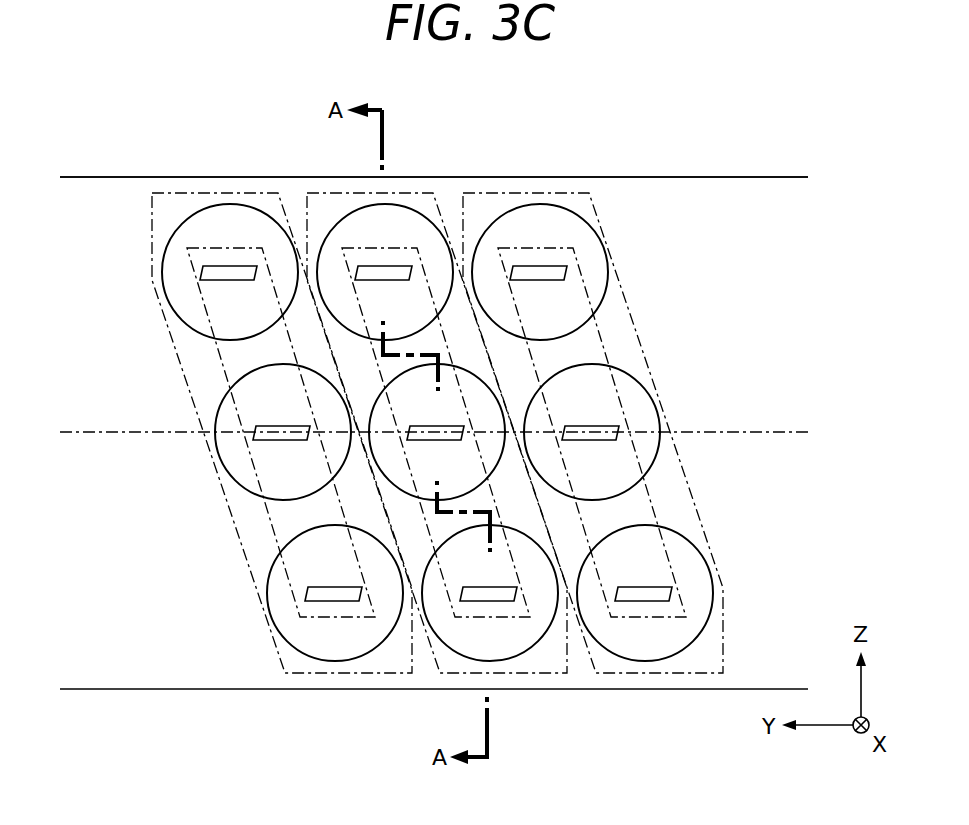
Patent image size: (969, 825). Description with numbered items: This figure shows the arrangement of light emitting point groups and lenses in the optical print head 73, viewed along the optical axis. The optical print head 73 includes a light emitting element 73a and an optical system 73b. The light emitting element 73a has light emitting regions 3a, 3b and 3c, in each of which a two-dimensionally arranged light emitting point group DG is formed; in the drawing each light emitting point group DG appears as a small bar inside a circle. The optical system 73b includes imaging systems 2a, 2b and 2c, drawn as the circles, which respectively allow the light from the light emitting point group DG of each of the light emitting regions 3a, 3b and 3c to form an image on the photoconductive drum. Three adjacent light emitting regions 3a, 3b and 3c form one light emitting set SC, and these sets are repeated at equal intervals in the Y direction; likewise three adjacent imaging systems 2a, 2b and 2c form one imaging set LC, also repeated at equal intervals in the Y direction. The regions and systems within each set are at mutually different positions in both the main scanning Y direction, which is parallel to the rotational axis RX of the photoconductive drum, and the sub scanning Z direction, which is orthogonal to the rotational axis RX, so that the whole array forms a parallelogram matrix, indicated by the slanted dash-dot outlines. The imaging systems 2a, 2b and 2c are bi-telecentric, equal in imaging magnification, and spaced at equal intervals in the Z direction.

The imaging system 2a is at (222, 401).
The imaging system 2b is at (268, 580).
The imaging system 2c is at (174, 233).
The light emitting region 3a is at (253, 433).
The light emitting region 3b is at (307, 591).
The light emitting region 3c is at (359, 299).
The optical print head 73 is at (730, 158).
The light emitting element 73a is at (702, 303).
The optical system 73b is at (147, 571).
The light emitting point group DG is at (203, 272).
The rotational axis RX is at (764, 432).
The light emitting set SC is at (210, 247).
The imaging set LC is at (237, 192).